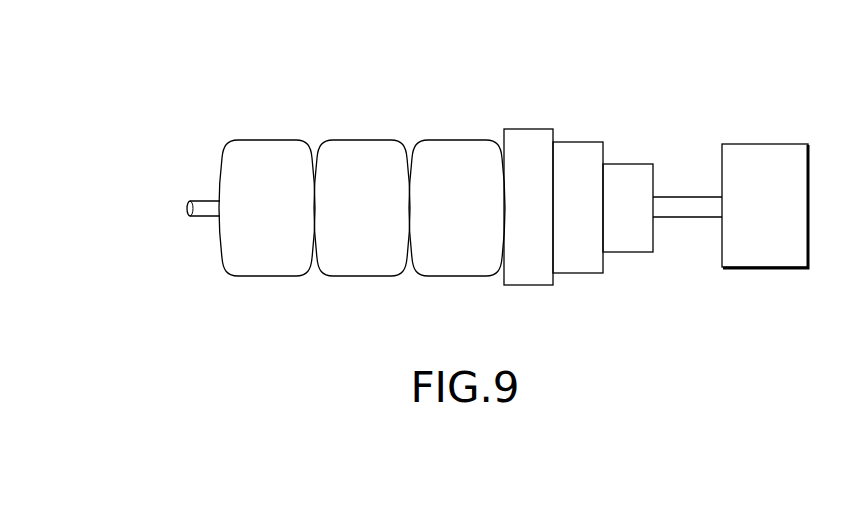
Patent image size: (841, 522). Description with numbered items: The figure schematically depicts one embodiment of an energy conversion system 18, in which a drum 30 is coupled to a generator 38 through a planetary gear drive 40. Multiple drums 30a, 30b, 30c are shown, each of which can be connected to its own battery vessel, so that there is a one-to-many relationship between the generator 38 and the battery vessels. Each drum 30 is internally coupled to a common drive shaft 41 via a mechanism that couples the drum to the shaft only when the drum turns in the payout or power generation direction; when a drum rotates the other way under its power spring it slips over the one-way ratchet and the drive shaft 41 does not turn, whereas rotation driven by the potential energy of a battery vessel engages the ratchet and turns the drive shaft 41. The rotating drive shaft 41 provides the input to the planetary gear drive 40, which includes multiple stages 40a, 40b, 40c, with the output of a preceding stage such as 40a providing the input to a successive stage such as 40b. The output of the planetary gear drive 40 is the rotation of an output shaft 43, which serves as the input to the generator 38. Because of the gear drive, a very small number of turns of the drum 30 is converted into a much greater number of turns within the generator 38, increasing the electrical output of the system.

The energy conversion system 18 is at (629, 64).
The drum 30 is at (222, 313).
The drum 30a is at (276, 151).
The drum 30b is at (363, 151).
The drum 30c is at (454, 151).
The planetary gear drive 40 is at (661, 313).
The stage of planetary gear drive 40a is at (534, 139).
The stage of planetary gear drive 40b is at (589, 155).
The stage of planetary gear drive 40c is at (629, 170).
The generator 38 is at (774, 155).
The drive shaft 41 is at (206, 217).
The output shaft 43 is at (702, 219).